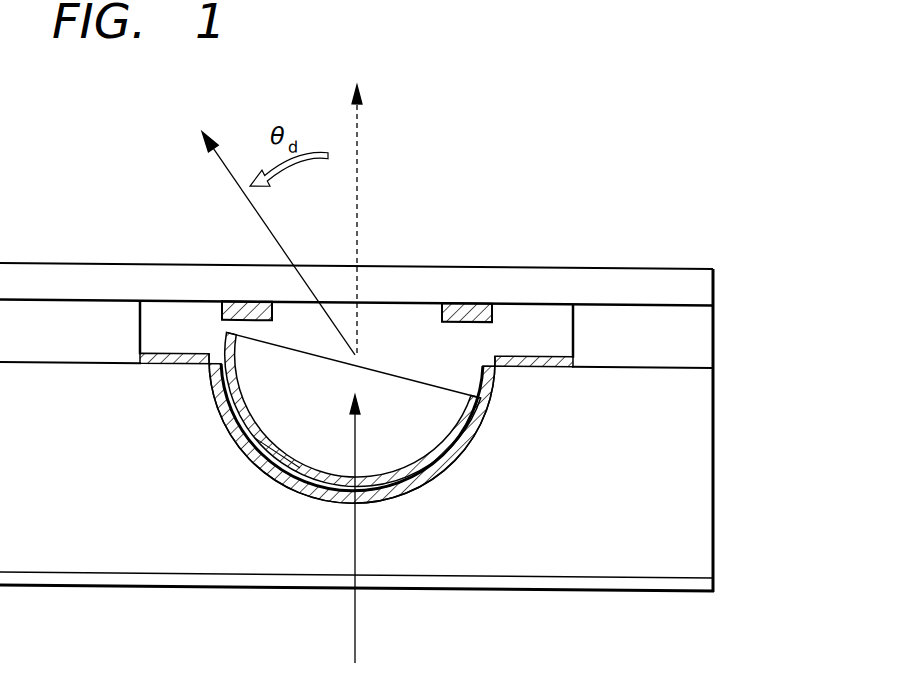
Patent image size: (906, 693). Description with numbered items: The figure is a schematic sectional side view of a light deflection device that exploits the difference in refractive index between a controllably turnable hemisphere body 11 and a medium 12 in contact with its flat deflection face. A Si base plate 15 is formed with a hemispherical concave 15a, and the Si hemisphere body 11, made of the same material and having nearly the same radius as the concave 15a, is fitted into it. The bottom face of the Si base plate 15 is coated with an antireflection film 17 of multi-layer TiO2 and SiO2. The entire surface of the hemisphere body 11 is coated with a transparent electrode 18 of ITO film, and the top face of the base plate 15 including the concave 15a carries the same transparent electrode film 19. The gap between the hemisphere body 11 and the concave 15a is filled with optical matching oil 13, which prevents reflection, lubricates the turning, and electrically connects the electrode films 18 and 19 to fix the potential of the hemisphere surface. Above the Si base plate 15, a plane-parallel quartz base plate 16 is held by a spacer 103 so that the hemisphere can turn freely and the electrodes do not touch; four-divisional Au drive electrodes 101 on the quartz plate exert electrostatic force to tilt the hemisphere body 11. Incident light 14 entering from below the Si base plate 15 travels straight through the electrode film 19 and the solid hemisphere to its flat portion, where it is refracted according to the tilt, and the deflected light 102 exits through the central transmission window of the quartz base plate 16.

The hemisphere body 11 is at (300, 450).
The medium 12 is at (413, 321).
The optical matching oil 13 is at (427, 477).
The incident light 14 is at (356, 623).
The Si base plate 15 is at (632, 566).
The hemispherical concave 15a is at (473, 436).
The quartz base plate 16 is at (675, 270).
The antireflection film 17 is at (87, 577).
The transparent electrode 18 is at (382, 366).
The transparent electrode film 19 is at (172, 350).
The drive electrodes 101 is at (472, 299).
The deflected light 102 is at (268, 219).
The spacer 103 is at (607, 320).